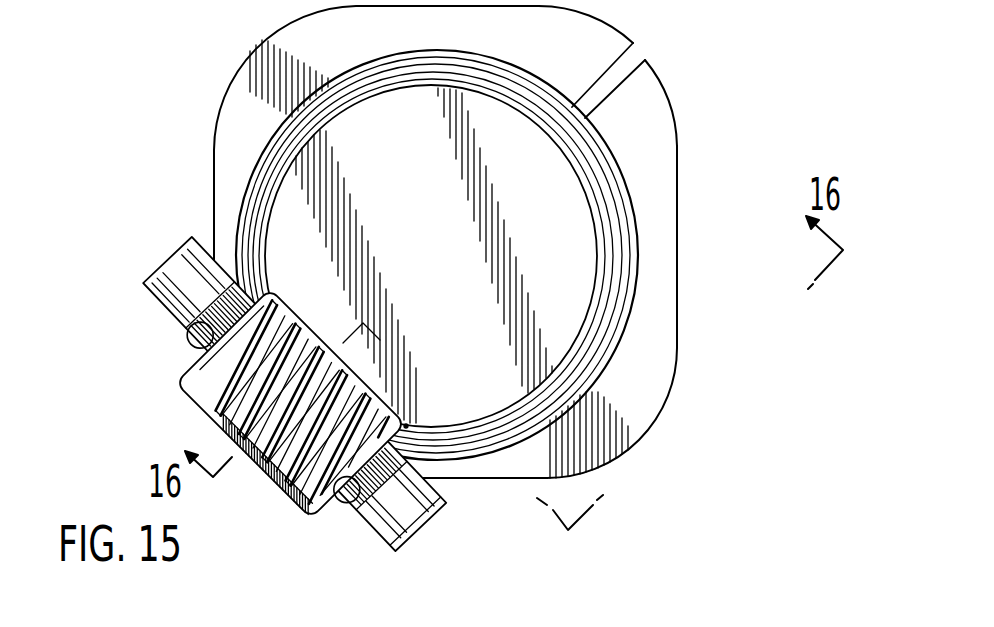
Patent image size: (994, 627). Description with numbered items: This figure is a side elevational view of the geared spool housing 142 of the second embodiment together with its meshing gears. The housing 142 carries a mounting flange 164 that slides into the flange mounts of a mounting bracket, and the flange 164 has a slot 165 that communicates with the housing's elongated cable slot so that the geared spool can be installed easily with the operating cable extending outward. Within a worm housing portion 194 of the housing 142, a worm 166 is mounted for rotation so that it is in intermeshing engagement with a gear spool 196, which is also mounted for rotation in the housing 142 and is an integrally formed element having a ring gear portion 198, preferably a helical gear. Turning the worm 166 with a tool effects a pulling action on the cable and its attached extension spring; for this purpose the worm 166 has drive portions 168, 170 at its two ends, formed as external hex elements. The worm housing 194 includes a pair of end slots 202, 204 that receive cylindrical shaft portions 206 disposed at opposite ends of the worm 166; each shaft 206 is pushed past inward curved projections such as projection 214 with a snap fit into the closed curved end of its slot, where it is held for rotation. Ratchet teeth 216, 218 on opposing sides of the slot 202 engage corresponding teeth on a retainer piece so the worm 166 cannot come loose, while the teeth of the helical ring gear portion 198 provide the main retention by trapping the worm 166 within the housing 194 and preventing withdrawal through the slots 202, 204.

The geared spool housing 142 is at (217, 113).
The mounting flange 164 is at (678, 160).
The slot 165 is at (636, 65).
The worm 166 is at (268, 472).
The drive portion 168 is at (412, 543).
The drive portion 170 is at (200, 240).
The worm housing portion 194 is at (205, 405).
The gear spool 196 is at (406, 425).
The ring gear portion 198 is at (325, 332).
The end slot 202 is at (236, 292).
The end slot 204 is at (412, 433).
The cylindrical shaft portion 206 is at (222, 322).
The curved projection 214 is at (282, 325).
The ratchet teeth 216 is at (197, 327).
The ratchet teeth 218 is at (237, 274).